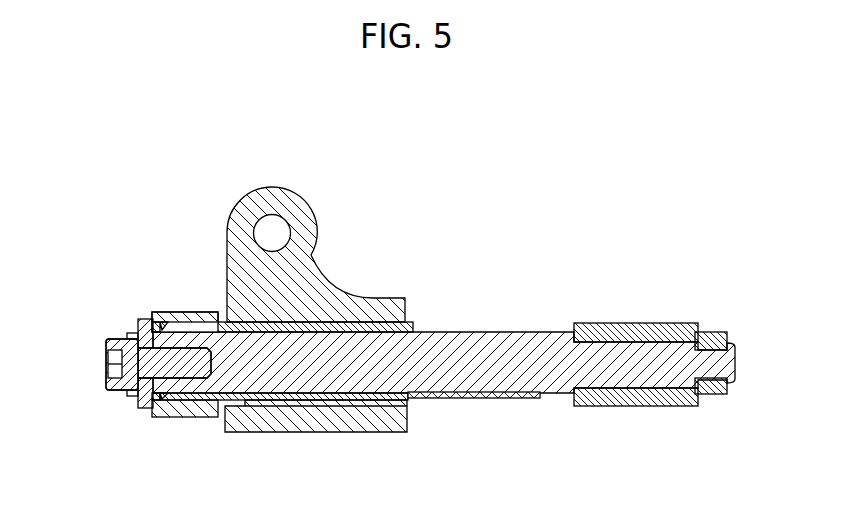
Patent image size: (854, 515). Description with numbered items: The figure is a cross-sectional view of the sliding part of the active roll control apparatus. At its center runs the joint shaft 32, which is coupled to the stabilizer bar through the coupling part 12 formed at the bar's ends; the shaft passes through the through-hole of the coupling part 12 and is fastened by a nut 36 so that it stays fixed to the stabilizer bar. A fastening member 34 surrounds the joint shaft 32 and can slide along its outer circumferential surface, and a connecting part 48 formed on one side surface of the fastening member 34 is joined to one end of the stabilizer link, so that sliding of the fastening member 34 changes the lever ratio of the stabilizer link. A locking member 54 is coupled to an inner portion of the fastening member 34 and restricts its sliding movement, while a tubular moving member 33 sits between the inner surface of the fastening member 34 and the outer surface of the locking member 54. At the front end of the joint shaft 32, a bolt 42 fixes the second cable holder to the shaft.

The coupling part 12 is at (652, 323).
The joint shaft 32 is at (475, 332).
The moving member 33 is at (408, 320).
The fastening member 34 is at (265, 432).
The nut 36 is at (712, 333).
The bolt 42 is at (107, 338).
The connecting part 48 is at (298, 207).
The locking member 54 is at (420, 400).